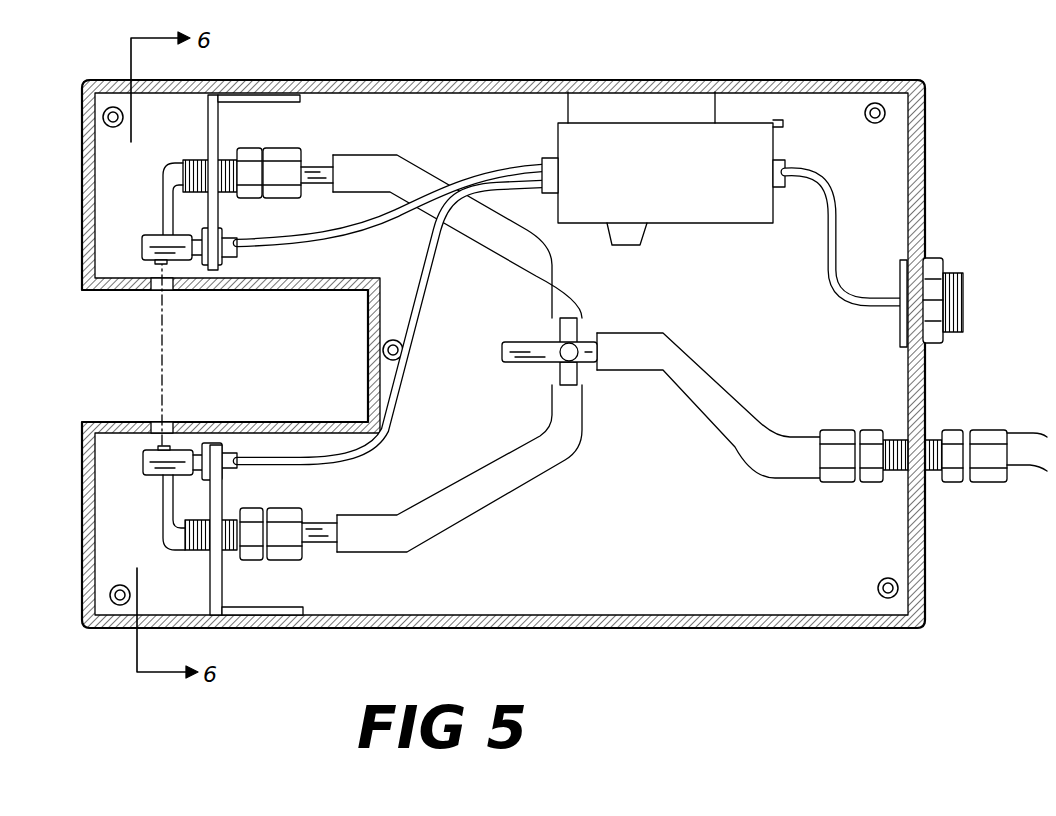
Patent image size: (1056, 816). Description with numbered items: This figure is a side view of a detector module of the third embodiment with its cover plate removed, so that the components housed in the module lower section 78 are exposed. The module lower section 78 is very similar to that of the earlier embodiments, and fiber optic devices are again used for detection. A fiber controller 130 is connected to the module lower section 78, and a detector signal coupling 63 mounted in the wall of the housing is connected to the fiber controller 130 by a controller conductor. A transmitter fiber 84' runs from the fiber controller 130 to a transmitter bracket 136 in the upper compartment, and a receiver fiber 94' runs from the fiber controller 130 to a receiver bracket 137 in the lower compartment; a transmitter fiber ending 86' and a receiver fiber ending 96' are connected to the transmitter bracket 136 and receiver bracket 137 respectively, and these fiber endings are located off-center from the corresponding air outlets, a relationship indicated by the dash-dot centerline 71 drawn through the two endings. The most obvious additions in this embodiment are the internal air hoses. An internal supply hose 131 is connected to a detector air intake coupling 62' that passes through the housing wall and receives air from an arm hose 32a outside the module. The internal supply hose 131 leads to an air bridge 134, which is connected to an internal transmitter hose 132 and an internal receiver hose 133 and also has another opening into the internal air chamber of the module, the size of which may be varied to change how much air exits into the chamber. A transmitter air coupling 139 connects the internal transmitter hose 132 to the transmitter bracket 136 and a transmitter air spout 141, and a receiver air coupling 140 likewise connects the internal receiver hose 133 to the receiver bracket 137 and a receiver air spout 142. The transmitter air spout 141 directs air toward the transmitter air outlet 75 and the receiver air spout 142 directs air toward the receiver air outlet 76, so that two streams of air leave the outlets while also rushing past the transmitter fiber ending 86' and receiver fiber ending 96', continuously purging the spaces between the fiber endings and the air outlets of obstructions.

The transmitter bracket 136 is at (227, 117).
The fiber controller 130 is at (604, 102).
The module lower section 78 is at (781, 80).
The transmitter air coupling 139 is at (186, 164).
The transmitter air spout 141 is at (163, 214).
The internal transmitter hose 132 is at (370, 162).
The detector signal coupling 63 is at (950, 270).
The transmitter air outlet 75 is at (152, 292).
The transmitter fiber ending 86' is at (189, 281).
The transmitter fiber 84' is at (389, 251).
The air bridge 134 is at (525, 340).
The axis 71 is at (164, 343).
The receiver air outlet 76 is at (157, 421).
The receiver fiber ending 96' is at (198, 434).
The receiver fiber 94' is at (389, 322).
The receiver air spout 142 is at (162, 495).
The receiver air coupling 140 is at (184, 548).
The receiver bracket 137 is at (209, 597).
The internal receiver hose 133 is at (480, 497).
The internal supply hose 131 is at (760, 455).
The detector air intake coupling 62' is at (913, 491).
The arm hose 32a is at (1021, 462).